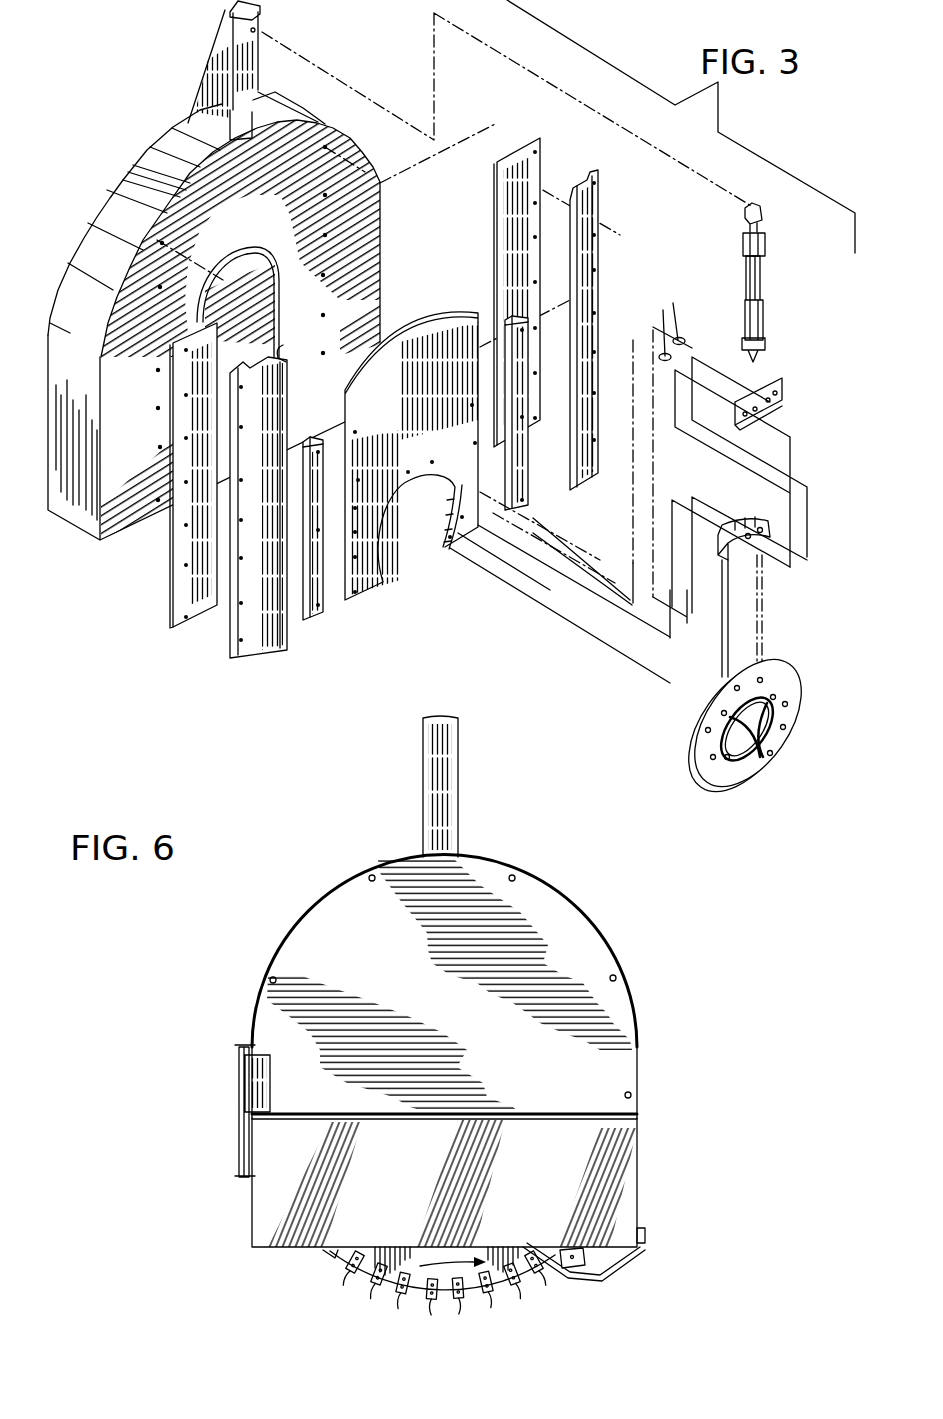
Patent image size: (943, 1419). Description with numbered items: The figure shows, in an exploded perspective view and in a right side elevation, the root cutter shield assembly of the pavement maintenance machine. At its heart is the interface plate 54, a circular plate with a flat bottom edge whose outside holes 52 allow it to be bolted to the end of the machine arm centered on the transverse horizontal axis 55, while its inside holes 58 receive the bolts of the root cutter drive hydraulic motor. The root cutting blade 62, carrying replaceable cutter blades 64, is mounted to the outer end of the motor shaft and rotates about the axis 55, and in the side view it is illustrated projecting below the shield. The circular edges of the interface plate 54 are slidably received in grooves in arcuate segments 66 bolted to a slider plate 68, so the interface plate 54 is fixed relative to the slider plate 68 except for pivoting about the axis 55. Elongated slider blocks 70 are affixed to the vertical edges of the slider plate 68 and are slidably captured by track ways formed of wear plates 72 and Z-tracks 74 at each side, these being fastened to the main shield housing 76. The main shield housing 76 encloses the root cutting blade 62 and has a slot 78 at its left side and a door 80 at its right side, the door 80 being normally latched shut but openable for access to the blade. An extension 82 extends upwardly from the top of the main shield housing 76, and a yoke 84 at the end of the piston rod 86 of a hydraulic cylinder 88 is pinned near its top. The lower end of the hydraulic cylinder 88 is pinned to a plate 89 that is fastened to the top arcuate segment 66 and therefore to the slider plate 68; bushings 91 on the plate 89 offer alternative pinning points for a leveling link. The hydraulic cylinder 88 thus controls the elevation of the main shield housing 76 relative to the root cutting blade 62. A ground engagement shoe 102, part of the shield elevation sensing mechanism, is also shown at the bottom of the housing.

In FIG. 3, the outside holes 52 is at (793, 717).
In FIG. 3, the interface plate 54 is at (705, 783).
In FIG. 3, the transverse horizontal axis 55 is at (600, 638).
In FIG. 3, the inside holes 58 is at (765, 752).
In FIG. 6, the root cutting blade 62 is at (503, 1288).
In FIG. 6, the replaceable cutter blades 64 is at (400, 1290).
In FIG. 3, the arcuate segments 66 is at (762, 518).
In FIG. 3, the slider plate 68 is at (450, 317).
In FIG. 3, the elongated slider blocks 70 is at (317, 617).
In FIG. 3, the wear plates 72 is at (173, 590).
In FIG. 3, the Z-tracks 74 is at (227, 643).
In FIG. 3, the main shield housing 76 is at (145, 143).
In FIG. 6, the main shield housing 76 is at (555, 880).
In FIG. 3, the slot 78 is at (285, 353).
In FIG. 6, the door 80 is at (590, 940).
In FIG. 3, the extension 82 is at (217, 62).
In FIG. 6, the extension 82 is at (423, 772).
In FIG. 3, the yoke 84 is at (763, 210).
In FIG. 3, the piston rod 86 is at (767, 233).
In FIG. 3, the hydraulic cylinder 88 is at (762, 278).
In FIG. 3, the plate 89 is at (773, 398).
In FIG. 3, the bushings 91 is at (672, 321).
In FIG. 6, the ground engagement shoe 102 is at (650, 1252).